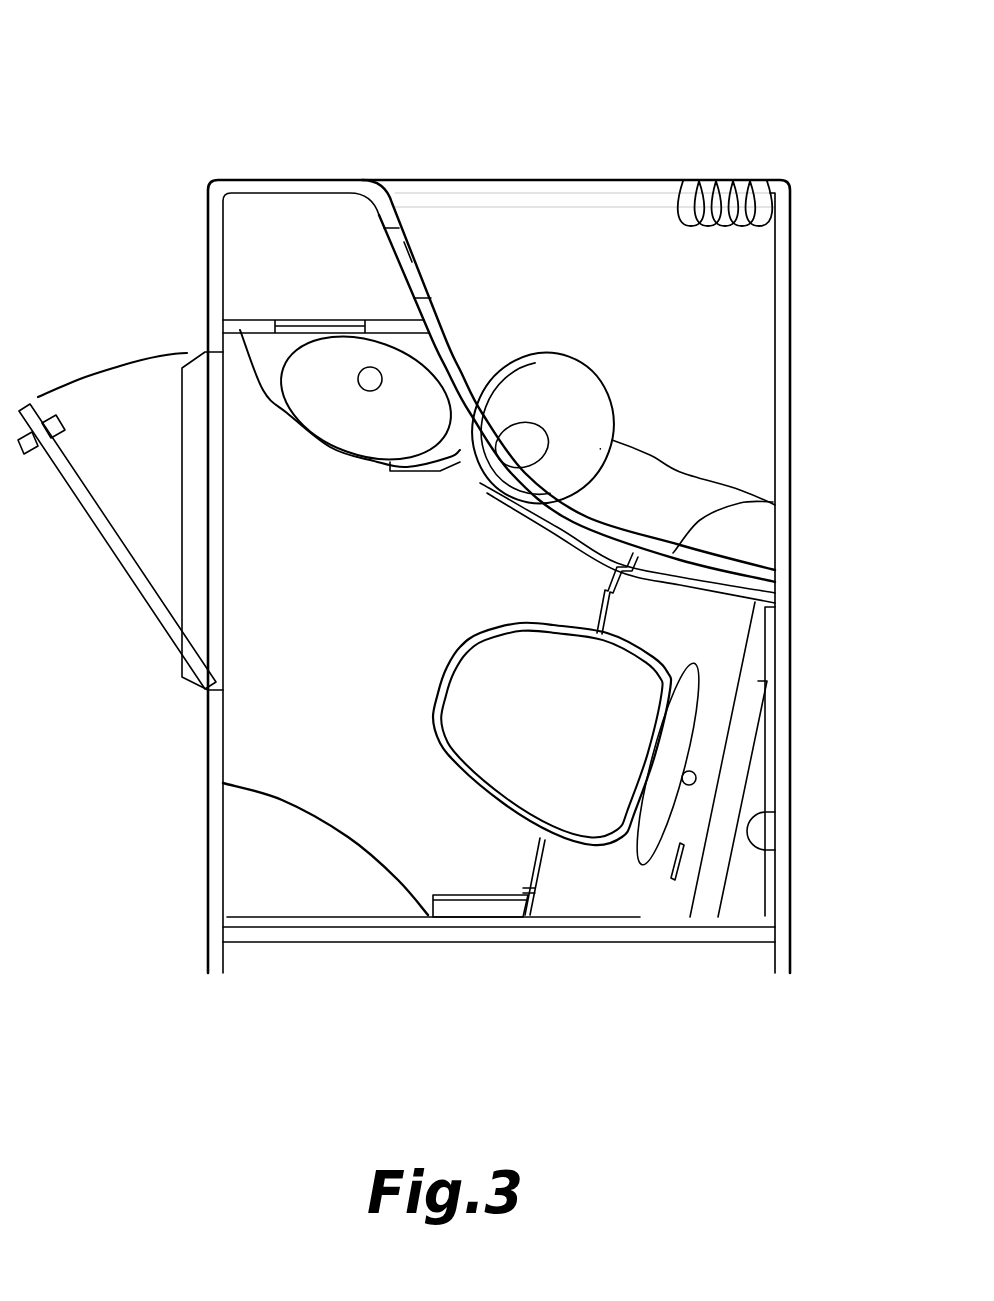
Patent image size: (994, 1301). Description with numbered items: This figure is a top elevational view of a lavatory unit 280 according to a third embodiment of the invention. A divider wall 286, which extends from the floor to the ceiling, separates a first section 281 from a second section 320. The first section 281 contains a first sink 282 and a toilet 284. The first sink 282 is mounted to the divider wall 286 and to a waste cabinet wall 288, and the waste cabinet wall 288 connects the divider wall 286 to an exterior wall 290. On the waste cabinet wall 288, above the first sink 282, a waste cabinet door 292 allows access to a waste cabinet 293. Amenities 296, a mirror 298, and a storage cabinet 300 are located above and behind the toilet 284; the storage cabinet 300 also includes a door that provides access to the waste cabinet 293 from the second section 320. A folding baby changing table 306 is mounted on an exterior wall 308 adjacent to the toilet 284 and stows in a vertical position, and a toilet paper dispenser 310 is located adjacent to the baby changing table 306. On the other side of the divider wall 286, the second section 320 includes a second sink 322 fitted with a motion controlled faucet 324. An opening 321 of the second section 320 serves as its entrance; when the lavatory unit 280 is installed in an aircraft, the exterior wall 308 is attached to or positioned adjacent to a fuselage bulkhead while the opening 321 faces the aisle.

The lavatory unit 280 is at (130, 88).
The first section 281 is at (385, 639).
The first sink 282 is at (340, 410).
The toilet 284 is at (487, 718).
The divider wall 286 is at (495, 465).
The waste cabinet wall 288 is at (255, 328).
The exterior wall 290 is at (208, 263).
The waste cabinet door 292 is at (290, 332).
The waste cabinet 293 is at (298, 225).
The amenities 296 is at (733, 895).
The mirror 298 is at (765, 848).
The storage cabinet 300 is at (672, 908).
The baby changing table 306 is at (480, 922).
The exterior wall 308 is at (323, 938).
The toilet paper dispenser 310 is at (268, 864).
The second section 320 is at (708, 301).
The opening 321 is at (673, 158).
The second sink 322 is at (523, 393).
The motion controlled faucet 324 is at (537, 437).